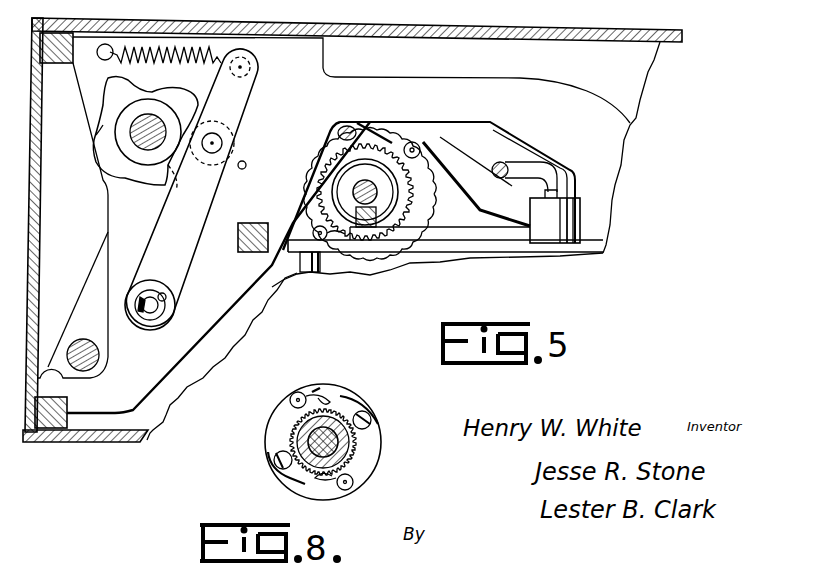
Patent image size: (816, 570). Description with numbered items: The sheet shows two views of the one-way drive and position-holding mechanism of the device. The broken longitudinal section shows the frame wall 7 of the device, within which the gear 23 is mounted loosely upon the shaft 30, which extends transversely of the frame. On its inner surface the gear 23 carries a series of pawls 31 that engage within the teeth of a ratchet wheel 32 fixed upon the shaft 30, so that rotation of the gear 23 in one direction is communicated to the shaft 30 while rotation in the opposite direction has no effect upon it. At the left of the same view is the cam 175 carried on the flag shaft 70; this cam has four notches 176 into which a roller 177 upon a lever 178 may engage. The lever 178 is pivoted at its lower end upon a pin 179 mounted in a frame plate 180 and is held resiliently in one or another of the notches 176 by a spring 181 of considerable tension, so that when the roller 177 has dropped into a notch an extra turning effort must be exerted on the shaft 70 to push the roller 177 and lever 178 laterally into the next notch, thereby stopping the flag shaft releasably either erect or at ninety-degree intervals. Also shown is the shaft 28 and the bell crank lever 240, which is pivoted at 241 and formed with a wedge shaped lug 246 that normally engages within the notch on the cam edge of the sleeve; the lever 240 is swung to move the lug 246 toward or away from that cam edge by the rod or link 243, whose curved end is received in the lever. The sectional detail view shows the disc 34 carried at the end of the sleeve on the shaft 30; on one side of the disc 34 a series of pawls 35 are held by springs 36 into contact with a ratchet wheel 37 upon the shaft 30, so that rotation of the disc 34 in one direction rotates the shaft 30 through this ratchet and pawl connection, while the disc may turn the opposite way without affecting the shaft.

In FIG. 5, the frame casing 7 is at (600, 30).
In FIG. 5, the spring 181 is at (185, 56).
In FIG. 5, the cam 175 is at (110, 90).
In FIG. 5, the notches 176 is at (153, 92).
In FIG. 5, the flag shaft 70 is at (153, 125).
In FIG. 5, the lever 178 is at (237, 115).
In FIG. 5, the roller 177 is at (237, 150).
In FIG. 5, the shaft 28 is at (99, 358).
In FIG. 5, the pin 179 is at (160, 307).
In FIG. 5, the bracket plate 180 is at (195, 320).
In FIG. 5, the wedge shaped lug 246 is at (356, 210).
In FIG. 5, the shaft 30 is at (353, 193).
In FIG. 8, the shaft 30 is at (337, 448).
In FIG. 5, the ratchet wheel 32 is at (373, 125).
In FIG. 5, the pawls 31 is at (420, 148).
In FIG. 5, the gear 23 is at (423, 180).
In FIG. 5, the link 243 is at (515, 170).
In FIG. 5, the pivot 241 is at (567, 197).
In FIG. 5, the bell crank lever 240 is at (450, 245).
In FIG. 8, the disc 34 is at (270, 422).
In FIG. 8, the pawls 35 is at (317, 392).
In FIG. 8, the springs 36 is at (360, 402).
In FIG. 8, the ratchet wheel 37 is at (357, 442).